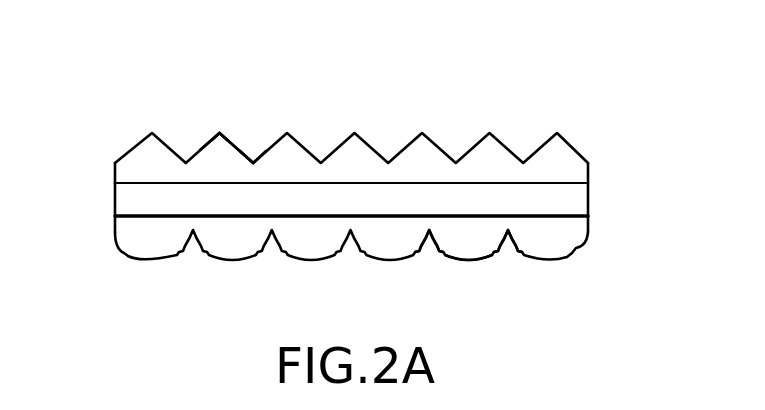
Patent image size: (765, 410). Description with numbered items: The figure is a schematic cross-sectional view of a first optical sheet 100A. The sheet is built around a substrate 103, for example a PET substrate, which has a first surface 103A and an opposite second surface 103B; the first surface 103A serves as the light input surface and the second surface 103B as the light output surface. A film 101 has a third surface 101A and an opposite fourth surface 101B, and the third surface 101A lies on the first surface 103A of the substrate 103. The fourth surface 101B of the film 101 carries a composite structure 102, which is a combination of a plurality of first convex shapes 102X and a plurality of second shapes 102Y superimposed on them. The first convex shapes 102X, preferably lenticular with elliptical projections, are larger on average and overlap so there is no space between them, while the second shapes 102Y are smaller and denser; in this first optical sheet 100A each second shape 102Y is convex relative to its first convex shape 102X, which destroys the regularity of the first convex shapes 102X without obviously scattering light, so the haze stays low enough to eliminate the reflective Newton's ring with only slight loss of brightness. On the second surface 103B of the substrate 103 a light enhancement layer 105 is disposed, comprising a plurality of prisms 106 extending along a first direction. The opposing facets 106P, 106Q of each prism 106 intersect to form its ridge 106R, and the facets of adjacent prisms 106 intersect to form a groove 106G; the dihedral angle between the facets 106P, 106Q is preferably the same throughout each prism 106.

The first optical sheet 100A is at (382, 164).
The film 101 is at (349, 269).
The third surface 101A is at (132, 217).
The fourth surface 101B is at (133, 258).
The composite structure 102 is at (539, 240).
The first convex shapes 102X is at (473, 260).
The second shapes 102Y is at (437, 250).
The substrate 103 is at (346, 182).
The first surface 103A is at (130, 217).
The second surface 103B is at (120, 183).
The light enhancement layer 105 is at (387, 121).
The prisms 106 is at (468, 163).
The facet 106P is at (203, 143).
The ridge 106R is at (220, 135).
The facet 106Q is at (236, 146).
The groove 106G is at (252, 158).